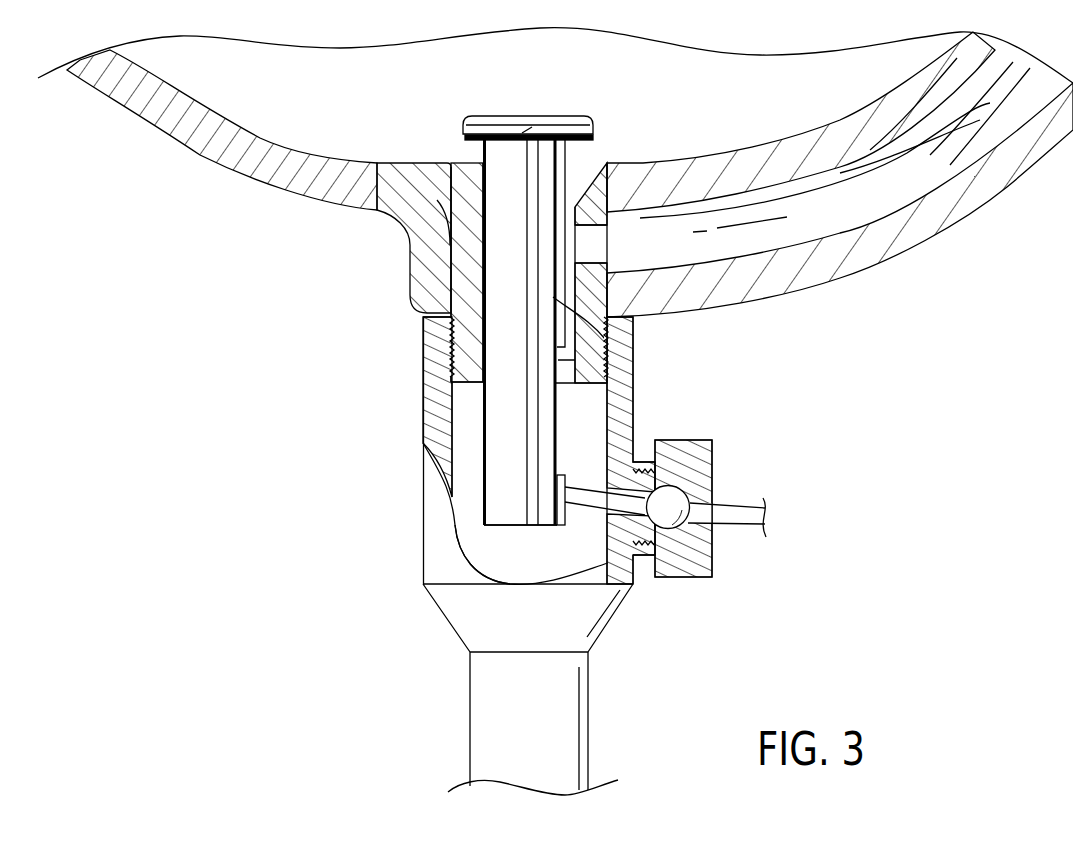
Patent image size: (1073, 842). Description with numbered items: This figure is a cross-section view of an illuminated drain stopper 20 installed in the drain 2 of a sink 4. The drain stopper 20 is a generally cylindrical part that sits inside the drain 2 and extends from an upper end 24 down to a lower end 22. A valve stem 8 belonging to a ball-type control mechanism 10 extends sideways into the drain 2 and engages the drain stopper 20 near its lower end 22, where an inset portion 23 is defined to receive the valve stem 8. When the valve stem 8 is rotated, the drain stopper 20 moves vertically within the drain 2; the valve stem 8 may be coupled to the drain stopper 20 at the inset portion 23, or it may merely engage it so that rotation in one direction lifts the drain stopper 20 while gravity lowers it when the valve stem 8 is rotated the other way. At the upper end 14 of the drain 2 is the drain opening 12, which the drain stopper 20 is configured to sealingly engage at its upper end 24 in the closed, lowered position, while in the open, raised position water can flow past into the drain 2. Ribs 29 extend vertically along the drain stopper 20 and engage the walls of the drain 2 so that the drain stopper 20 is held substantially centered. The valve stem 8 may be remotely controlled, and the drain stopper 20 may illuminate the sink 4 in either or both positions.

The drain 2 is at (407, 394).
The sink 4 is at (709, 57).
The valve stem 8 is at (610, 500).
The ball-type control mechanism 10 is at (677, 499).
The drain opening 12 is at (582, 180).
The upper end 14 is at (421, 155).
The drain stopper 20 is at (507, 155).
The lower end 22 is at (480, 529).
The inset portion 23 is at (562, 503).
The upper end 24 is at (468, 114).
The ribs 29 is at (481, 170).